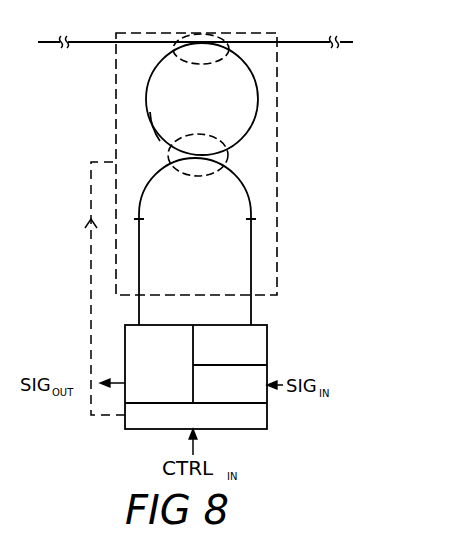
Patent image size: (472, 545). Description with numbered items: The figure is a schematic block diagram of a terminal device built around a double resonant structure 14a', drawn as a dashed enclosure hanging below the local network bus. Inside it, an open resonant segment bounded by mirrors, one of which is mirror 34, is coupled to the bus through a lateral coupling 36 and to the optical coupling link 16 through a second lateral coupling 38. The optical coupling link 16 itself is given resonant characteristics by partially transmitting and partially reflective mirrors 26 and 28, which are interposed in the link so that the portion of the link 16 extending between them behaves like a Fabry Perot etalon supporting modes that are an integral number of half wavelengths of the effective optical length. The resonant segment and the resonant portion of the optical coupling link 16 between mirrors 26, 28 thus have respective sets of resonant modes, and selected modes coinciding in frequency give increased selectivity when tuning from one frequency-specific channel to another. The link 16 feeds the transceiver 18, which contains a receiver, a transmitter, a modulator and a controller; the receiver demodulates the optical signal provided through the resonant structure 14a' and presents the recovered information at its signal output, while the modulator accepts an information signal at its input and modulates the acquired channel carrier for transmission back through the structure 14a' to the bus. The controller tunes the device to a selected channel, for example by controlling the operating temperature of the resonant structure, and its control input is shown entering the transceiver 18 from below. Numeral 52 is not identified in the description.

The double resonant structure 14a' is at (233, 164).
The lateral coupling 36 is at (213, 33).
The upper sphere 52 is at (153, 70).
The mirror 34 is at (152, 130).
The lateral coupling 38 is at (193, 138).
The optical coupling link 16 is at (251, 264).
The mirror 26 is at (142, 220).
The mirror 28 is at (249, 220).
The transceiver 18 is at (267, 345).